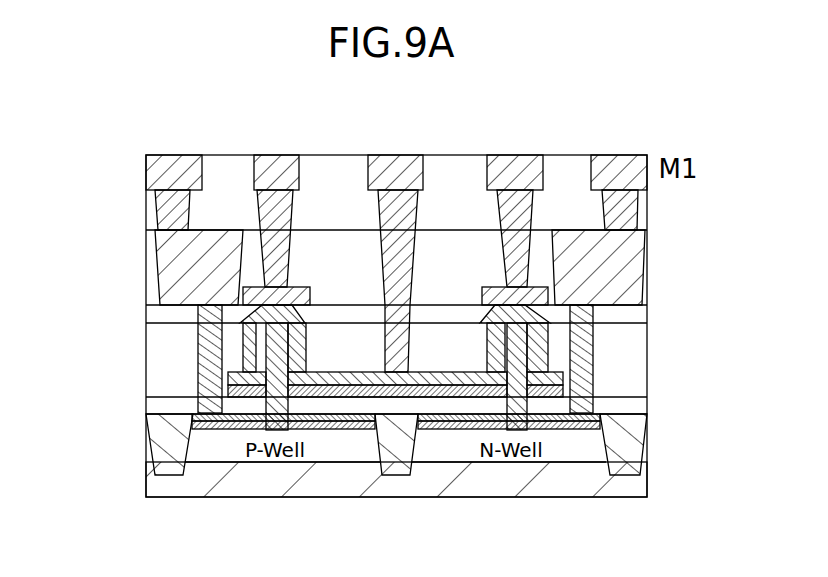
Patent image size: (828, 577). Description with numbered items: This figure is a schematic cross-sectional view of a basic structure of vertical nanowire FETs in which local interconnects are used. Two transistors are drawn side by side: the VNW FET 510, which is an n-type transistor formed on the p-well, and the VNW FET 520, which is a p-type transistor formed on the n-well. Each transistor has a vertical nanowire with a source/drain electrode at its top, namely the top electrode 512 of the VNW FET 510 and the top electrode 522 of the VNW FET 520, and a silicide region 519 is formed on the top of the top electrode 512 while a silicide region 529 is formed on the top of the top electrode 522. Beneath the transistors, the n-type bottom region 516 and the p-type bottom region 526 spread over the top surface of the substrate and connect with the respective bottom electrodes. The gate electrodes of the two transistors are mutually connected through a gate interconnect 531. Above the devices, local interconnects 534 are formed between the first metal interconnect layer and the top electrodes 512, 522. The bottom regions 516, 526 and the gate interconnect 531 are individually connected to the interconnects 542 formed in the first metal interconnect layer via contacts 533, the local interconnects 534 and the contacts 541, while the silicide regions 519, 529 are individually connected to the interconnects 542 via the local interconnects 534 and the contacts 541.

The VNW FET 510 is at (309, 332).
The top electrode 512 is at (297, 341).
The bottom region 516 is at (208, 430).
The silicide region 519 is at (297, 297).
The VNW FET 520 is at (481, 332).
The top electrode 522 is at (495, 338).
The bottom region 526 is at (442, 428).
The silicide region 529 is at (536, 295).
The gate interconnect 531 is at (348, 397).
The contact 533 is at (208, 343).
The local interconnect 534 is at (178, 277).
The contact 541 is at (172, 210).
The interconnect 542 is at (165, 175).